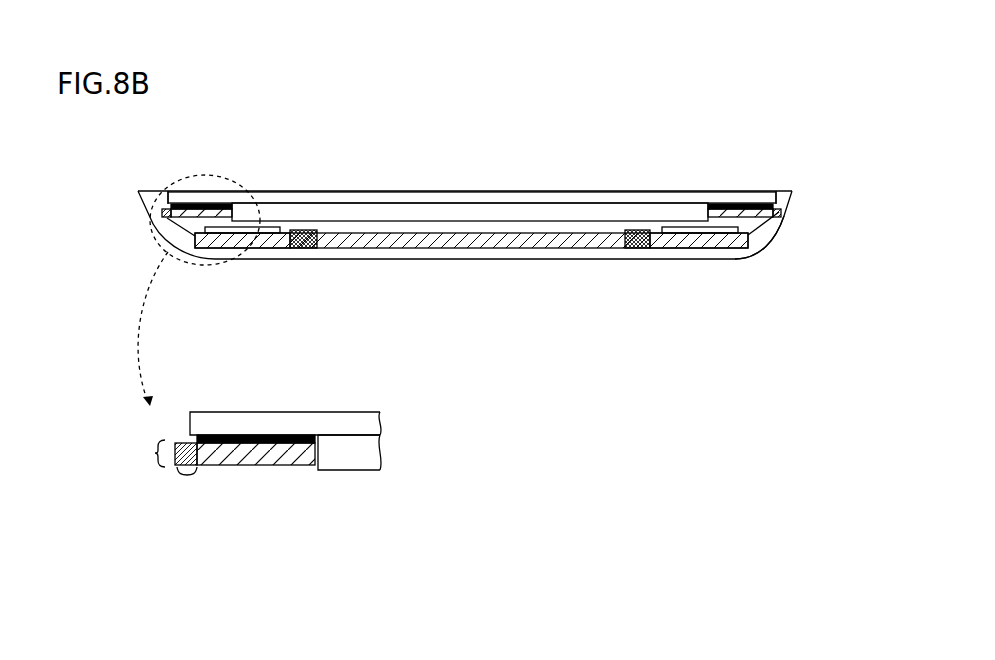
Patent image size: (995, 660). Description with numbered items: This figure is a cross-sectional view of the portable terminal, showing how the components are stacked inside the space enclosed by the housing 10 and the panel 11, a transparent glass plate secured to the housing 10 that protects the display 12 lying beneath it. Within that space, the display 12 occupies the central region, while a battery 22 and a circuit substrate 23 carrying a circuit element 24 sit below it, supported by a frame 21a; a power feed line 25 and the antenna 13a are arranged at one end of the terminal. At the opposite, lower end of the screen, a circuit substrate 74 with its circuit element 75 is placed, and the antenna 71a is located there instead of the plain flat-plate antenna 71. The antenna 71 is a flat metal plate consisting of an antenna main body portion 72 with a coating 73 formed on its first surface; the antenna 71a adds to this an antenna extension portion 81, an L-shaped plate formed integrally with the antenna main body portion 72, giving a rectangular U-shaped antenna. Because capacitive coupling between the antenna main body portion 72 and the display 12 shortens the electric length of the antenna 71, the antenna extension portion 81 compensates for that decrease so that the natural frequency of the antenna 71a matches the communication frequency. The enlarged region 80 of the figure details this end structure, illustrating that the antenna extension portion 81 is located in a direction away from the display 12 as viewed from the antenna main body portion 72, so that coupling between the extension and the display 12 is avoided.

The housing 10 is at (147, 213).
The panel 11 is at (500, 192).
The display 12 is at (570, 204).
The antenna 13a is at (800, 215).
The frame 21a is at (305, 249).
The battery 22 is at (458, 249).
The circuit substrate 23 is at (727, 249).
The circuit element 24 is at (693, 234).
The power feed line 25 is at (768, 245).
The antenna 71 is at (256, 513).
The antenna 71a is at (139, 453).
The antenna main body portion 72 is at (222, 448).
The coating 73 is at (264, 449).
The circuit substrate 74 is at (262, 236).
The circuit element 75 is at (232, 249).
The enlarged region 80 is at (214, 165).
The antenna extension portion 81 is at (185, 491).